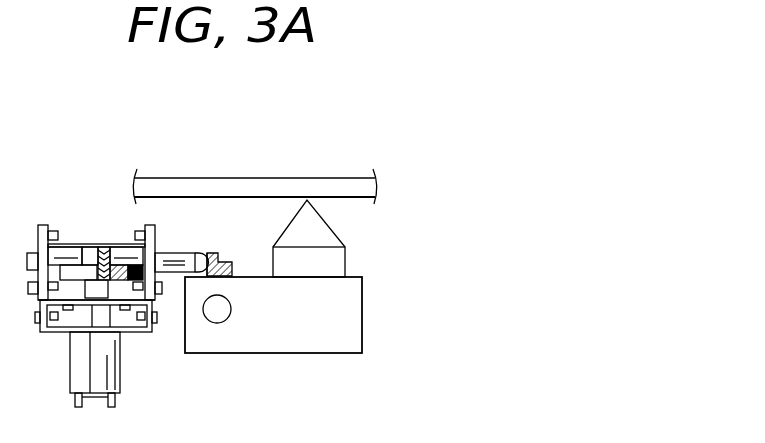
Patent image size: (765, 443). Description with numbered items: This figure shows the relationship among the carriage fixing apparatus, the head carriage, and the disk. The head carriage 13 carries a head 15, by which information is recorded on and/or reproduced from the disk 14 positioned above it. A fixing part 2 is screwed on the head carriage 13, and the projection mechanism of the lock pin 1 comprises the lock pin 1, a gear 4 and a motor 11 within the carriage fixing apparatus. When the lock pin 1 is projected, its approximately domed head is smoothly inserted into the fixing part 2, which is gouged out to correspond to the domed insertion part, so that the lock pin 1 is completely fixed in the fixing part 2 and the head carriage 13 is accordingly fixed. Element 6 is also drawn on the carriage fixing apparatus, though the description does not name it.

The lock pin 1 is at (183, 253).
The fixing part 2 is at (223, 262).
The gear 4 is at (93, 245).
The frame 6 is at (95, 282).
The motor 11 is at (107, 379).
The head carriage 13 is at (348, 320).
The disk 14 is at (347, 181).
The head 15 is at (332, 263).